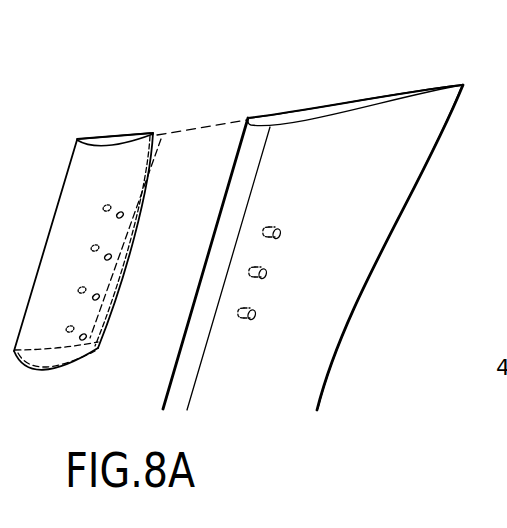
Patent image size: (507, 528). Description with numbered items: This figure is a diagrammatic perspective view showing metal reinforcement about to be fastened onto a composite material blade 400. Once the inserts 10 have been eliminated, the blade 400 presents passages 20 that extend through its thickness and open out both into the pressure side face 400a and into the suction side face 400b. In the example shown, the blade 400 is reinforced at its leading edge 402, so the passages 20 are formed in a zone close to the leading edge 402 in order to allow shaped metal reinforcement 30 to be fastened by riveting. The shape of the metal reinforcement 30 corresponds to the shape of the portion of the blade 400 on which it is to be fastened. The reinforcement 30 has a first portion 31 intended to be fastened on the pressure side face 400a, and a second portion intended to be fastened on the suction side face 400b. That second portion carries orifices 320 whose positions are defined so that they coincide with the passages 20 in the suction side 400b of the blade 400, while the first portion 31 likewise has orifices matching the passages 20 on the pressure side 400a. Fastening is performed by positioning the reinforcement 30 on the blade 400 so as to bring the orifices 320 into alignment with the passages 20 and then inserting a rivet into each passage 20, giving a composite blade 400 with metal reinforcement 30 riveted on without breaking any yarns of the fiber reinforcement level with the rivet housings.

The inserts 10 is at (101, 207).
The passages 20 is at (259, 315).
The metal reinforcement 30 is at (61, 171).
The first portion 31 is at (127, 132).
The orifices 320 is at (122, 217).
The composite material blade 400 is at (380, 73).
The pressure side face 400a is at (284, 113).
The suction side face 400b is at (402, 163).
The leading edge 402 is at (222, 251).